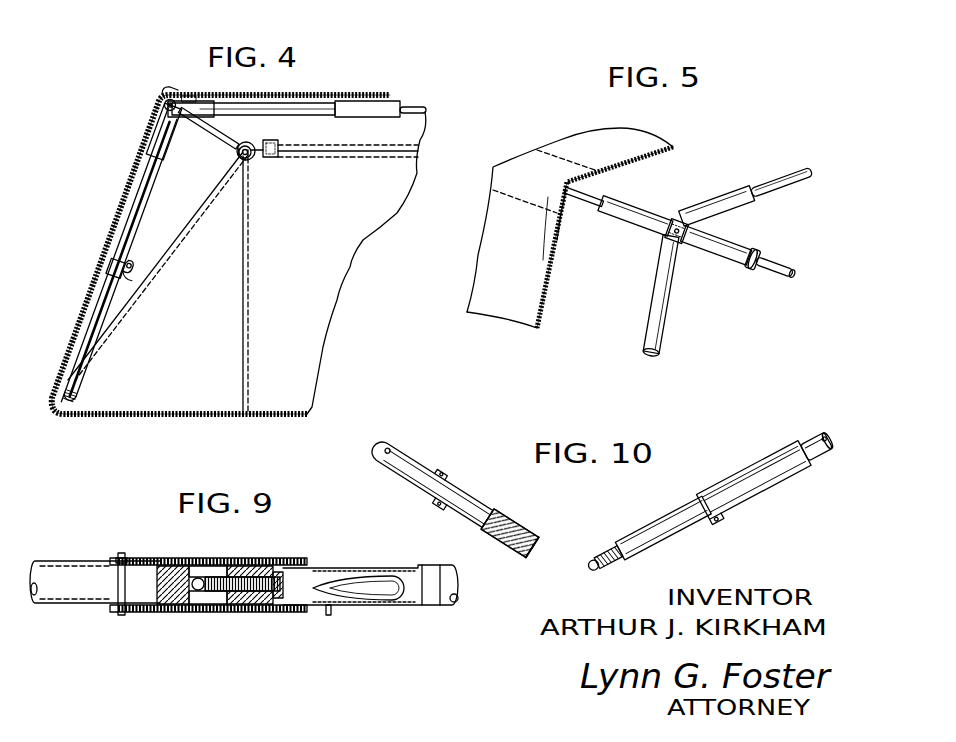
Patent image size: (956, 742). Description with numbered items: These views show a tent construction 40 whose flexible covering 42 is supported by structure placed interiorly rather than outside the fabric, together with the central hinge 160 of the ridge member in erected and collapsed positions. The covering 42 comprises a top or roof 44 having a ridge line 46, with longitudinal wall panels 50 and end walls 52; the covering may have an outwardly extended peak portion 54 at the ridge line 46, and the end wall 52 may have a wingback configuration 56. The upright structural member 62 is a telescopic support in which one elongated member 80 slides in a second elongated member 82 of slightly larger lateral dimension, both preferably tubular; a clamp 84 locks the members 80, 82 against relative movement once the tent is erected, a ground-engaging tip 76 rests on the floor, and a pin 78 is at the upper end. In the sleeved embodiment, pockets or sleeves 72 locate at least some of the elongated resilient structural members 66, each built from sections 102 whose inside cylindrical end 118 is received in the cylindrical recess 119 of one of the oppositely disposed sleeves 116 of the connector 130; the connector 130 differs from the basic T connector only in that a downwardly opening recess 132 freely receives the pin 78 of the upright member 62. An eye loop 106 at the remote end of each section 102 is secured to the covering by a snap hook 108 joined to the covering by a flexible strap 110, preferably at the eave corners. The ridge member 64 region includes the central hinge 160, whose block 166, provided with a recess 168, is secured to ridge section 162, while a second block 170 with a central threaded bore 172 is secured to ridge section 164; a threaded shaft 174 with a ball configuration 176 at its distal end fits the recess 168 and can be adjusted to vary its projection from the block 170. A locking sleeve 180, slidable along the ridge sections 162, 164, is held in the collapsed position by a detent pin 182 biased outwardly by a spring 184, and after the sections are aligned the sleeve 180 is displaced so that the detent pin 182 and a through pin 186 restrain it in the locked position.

In FIG. 4, the tent construction 40 is at (399, 91).
In FIG. 4, the flexible covering 42 is at (319, 325).
In FIG. 5, the top or roof 44 is at (577, 138).
In FIG. 4, the ridge line 46 is at (325, 96).
In FIG. 4, the longitudinal wall panel 50 is at (317, 269).
In FIG. 4, the end wall 52 is at (112, 215).
In FIG. 5, the end wall 52 is at (508, 305).
In FIG. 4, the outwardly extended peak portion 54 is at (173, 90).
In FIG. 4, the wingback configuration 56 is at (177, 181).
In FIG. 4, the upright structural member 62 is at (141, 205).
In FIG. 5, the upright structural member 62 is at (666, 318).
In FIG. 4, the rod 64 is at (423, 118).
In FIG. 5, the rod 64 is at (792, 164).
In FIG. 5, the elongated resilient structural member 66 is at (604, 188).
In FIG. 5, the pocket or sleeve 72 is at (560, 222).
In FIG. 4, the ground-engaging tip 76 is at (76, 395).
In FIG. 5, the pin 78 is at (703, 210).
In FIG. 4, the elongated member 80 is at (143, 167).
In FIG. 4, the second elongated member 82 is at (93, 312).
In FIG. 4, the clamp 84 is at (134, 273).
In FIG. 4, the section 102 is at (207, 128).
In FIG. 5, the section 102 is at (590, 203).
In FIG. 4, the eye loop 106 is at (190, 97).
In FIG. 4, the snap hook 108 is at (259, 164).
In FIG. 4, the flexible strap 110 is at (282, 158).
In FIG. 4, the sleeve 116 is at (163, 106).
In FIG. 5, the sleeve 116 is at (636, 214).
In FIG. 5, the cylindrical end 118 is at (755, 266).
In FIG. 5, the cylindrical recess 119 is at (762, 258).
In FIG. 4, the connector 130 is at (168, 84).
In FIG. 5, the connector 130 is at (677, 208).
In FIG. 5, the recess 132 is at (692, 231).
In FIG. 9, the central hinge 160 is at (272, 554).
In FIG. 9, the ridge section 162 is at (68, 607).
In FIG. 10, the ridge section 162 is at (410, 470).
In FIG. 9, the ridge section 164 is at (438, 567).
In FIG. 10, the ridge section 164 is at (812, 428).
In FIG. 9, the block 166 is at (170, 614).
In FIG. 10, the block 166 is at (514, 556).
In FIG. 9, the recess 168 is at (194, 613).
In FIG. 10, the recess 168 is at (526, 535).
In FIG. 9, the second block 170 is at (250, 613).
In FIG. 10, the second block 170 is at (625, 556).
In FIG. 9, the central threaded bore 172 is at (262, 611).
In FIG. 9, the threaded shaft 174 is at (214, 583).
In FIG. 9, the ball configuration 176 is at (196, 578).
In FIG. 10, the ball configuration 176 is at (585, 570).
In FIG. 9, the locking sleeve 180 is at (145, 628).
In FIG. 10, the locking sleeve 180 is at (766, 482).
In FIG. 9, the detent pin 182 is at (331, 614).
In FIG. 10, the detent pin 182 is at (713, 521).
In FIG. 9, the spring 184 is at (400, 607).
In FIG. 9, the through pin 186 is at (114, 567).
In FIG. 10, the through pin 186 is at (478, 491).